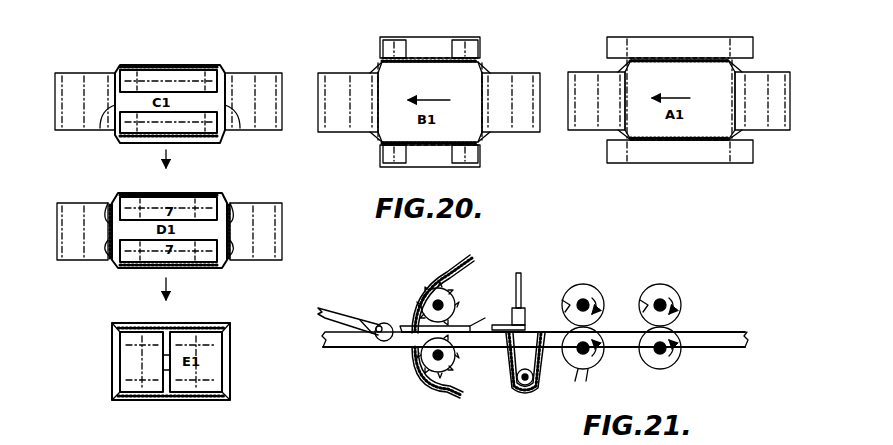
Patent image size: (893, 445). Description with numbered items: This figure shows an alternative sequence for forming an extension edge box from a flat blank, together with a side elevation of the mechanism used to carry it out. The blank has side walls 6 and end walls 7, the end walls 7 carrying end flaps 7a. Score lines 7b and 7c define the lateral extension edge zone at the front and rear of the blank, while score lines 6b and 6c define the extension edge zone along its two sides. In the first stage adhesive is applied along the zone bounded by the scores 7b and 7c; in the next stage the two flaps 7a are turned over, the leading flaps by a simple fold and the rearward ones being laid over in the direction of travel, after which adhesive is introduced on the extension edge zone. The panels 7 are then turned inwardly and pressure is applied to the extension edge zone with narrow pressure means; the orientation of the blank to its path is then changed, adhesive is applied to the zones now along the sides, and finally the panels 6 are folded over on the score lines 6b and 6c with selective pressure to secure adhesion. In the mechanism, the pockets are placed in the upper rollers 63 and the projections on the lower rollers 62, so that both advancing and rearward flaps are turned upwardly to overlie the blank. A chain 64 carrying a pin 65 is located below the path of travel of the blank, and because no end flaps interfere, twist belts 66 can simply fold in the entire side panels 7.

In FIG. 20, the side wall 6 is at (75, 88).
In FIG. 20, the score line 6b is at (110, 107).
In FIG. 20, the score line 6c is at (110, 257).
In FIG. 20, the end wall 7 is at (168, 80).
In FIG. 20, the end flap 7a is at (143, 65).
In FIG. 20, the score line 7b is at (155, 65).
In FIG. 20, the score line 7c is at (152, 200).
In FIG. 21, the lower roller 62 is at (577, 370).
In FIG. 21, the upper roller 63 is at (590, 293).
In FIG. 21, the chain 64 is at (512, 360).
In FIG. 21, the pin 65 is at (548, 375).
In FIG. 21, the twist belt 66 is at (355, 350).